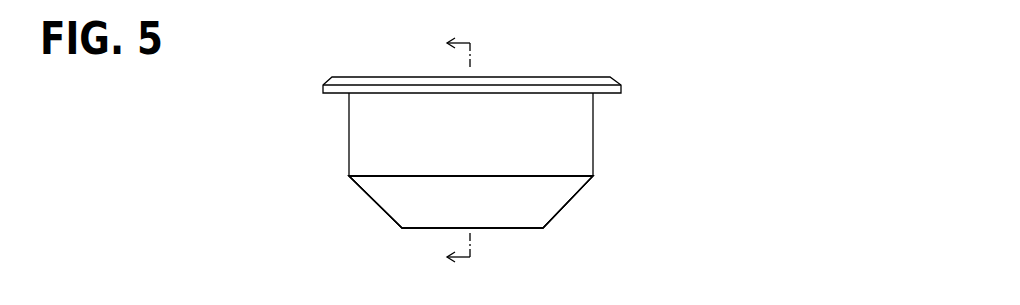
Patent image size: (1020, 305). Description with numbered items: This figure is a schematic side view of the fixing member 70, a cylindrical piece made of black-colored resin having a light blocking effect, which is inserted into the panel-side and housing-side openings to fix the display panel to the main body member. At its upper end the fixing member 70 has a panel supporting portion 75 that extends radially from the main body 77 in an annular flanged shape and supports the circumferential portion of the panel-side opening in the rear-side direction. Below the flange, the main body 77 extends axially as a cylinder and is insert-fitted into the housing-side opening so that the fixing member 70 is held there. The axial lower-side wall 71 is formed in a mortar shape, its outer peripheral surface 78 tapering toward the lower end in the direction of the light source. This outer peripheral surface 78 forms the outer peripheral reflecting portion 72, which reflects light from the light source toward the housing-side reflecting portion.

The fixing member 70 is at (675, 44).
The lower-side wall 71 is at (542, 199).
The outer peripheral reflecting portion 72 is at (369, 196).
The panel supporting portion 75 is at (332, 96).
The main body 77 is at (349, 131).
The outer peripheral surface 78 is at (471, 202).